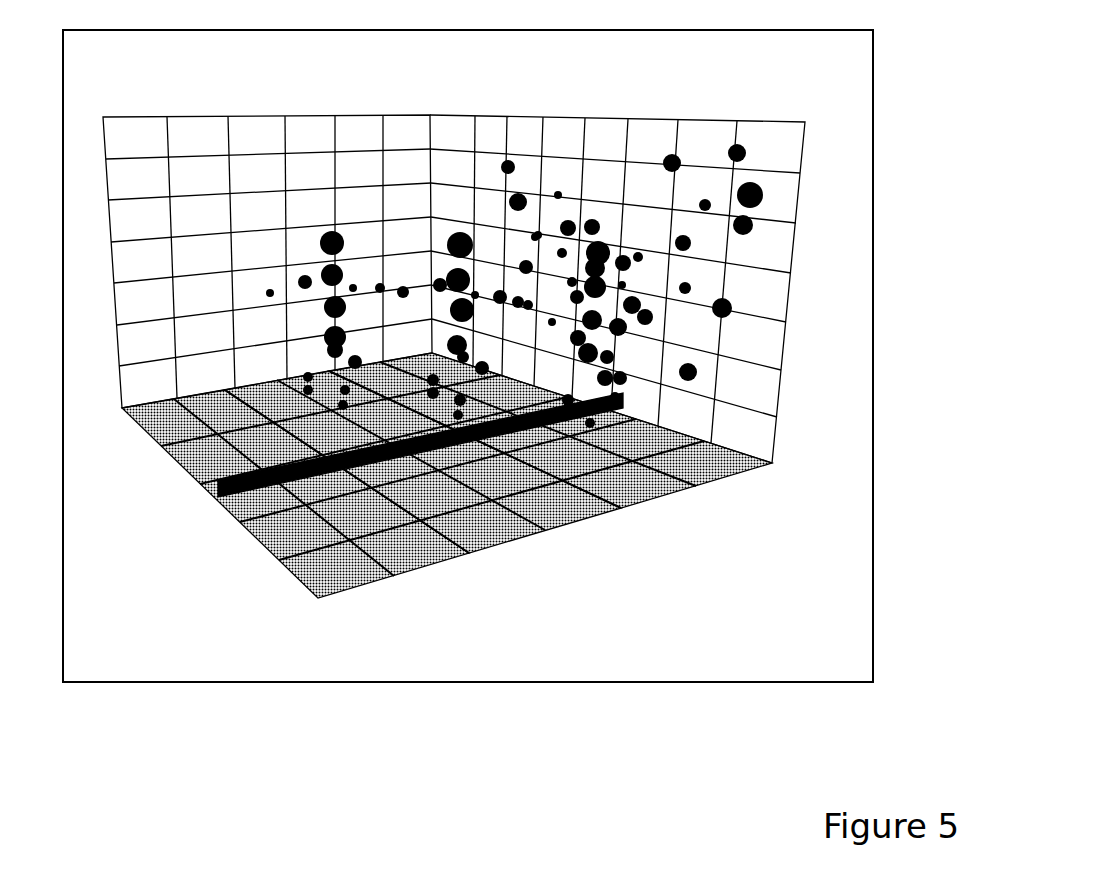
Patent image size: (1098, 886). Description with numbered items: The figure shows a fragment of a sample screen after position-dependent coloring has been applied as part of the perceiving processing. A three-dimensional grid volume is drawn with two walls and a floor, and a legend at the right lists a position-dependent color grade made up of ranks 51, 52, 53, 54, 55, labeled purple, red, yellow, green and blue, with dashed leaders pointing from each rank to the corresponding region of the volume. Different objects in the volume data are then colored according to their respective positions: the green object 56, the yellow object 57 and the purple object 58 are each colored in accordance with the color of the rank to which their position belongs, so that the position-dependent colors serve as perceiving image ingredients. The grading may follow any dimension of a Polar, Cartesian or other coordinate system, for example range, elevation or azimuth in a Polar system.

The rank of position-dependent color grade 51 is at (663, 422).
The rank of position-dependent color grade 52 is at (776, 453).
The rank of position-dependent color grade 53 is at (677, 493).
The rank of position-dependent color grade 54 is at (573, 530).
The rank of position-dependent color grade 55 is at (415, 577).
The object 56 is at (317, 215).
The object 57 is at (447, 215).
The object 58 is at (582, 200).